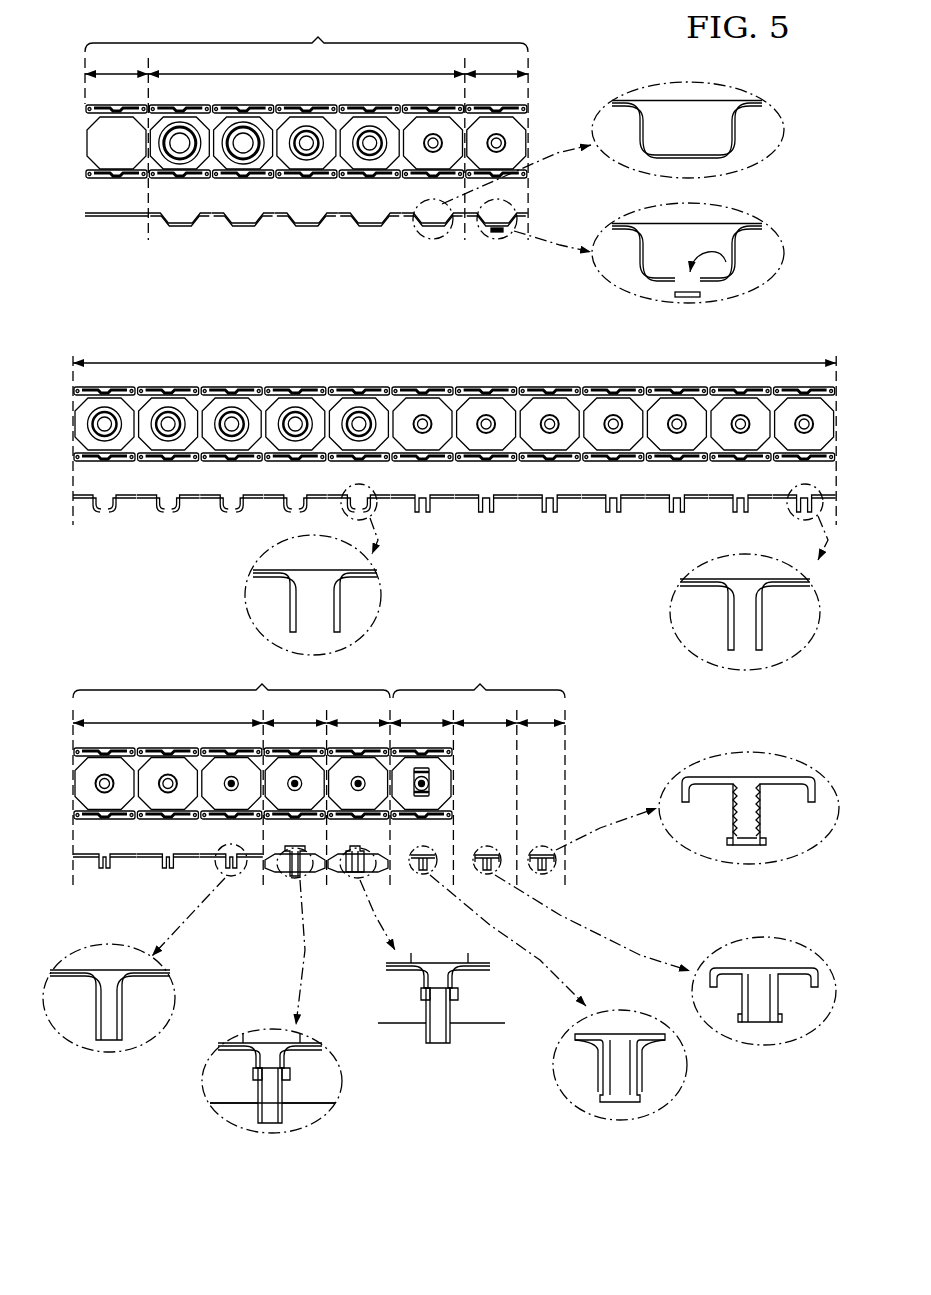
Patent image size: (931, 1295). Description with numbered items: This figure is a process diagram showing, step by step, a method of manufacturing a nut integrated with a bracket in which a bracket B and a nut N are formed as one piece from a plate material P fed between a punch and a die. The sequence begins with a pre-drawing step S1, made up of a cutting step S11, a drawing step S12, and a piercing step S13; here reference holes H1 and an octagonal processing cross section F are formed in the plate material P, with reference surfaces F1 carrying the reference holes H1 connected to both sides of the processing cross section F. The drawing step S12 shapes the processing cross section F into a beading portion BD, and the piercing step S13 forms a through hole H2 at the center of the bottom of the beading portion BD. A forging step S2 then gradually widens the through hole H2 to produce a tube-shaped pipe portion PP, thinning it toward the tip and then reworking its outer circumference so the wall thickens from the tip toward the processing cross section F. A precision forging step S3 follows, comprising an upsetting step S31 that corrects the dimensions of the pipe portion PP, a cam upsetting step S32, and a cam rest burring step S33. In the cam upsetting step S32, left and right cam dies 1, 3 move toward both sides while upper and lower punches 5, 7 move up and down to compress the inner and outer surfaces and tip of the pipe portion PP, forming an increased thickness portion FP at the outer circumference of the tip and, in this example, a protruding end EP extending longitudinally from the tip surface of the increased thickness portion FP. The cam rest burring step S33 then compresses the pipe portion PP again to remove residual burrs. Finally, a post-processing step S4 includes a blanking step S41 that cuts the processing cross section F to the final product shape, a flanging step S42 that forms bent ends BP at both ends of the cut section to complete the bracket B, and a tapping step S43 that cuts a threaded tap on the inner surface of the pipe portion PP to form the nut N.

The plate material P is at (84, 128).
The processing cross section F is at (100, 150).
The reference surface F1 is at (98, 105).
The reference hole H1 is at (88, 108).
The through hole H2 is at (718, 270).
The beading portion BD is at (742, 133).
The pipe portion PP is at (352, 601).
The bracket B is at (782, 780).
The bent end BP is at (810, 802).
The nut N is at (735, 812).
The increased thickness portion FP is at (284, 1080).
The protruding end EP is at (286, 1096).
The left cam die 1 is at (210, 1092).
The right cam die 3 is at (306, 1088).
The upper punch 5 is at (268, 1035).
The lower punch 7 is at (272, 1105).
The pre-drawing step S1 is at (306, 32).
The cutting step S11 is at (116, 60).
The drawing step S12 is at (306, 60).
The piercing step S13 is at (496, 60).
The forging step S2 is at (454, 349).
The precision forging step S3 is at (231, 679).
The upsetting step S31 is at (168, 709).
The cam upsetting step S32 is at (294, 709).
The cam rest burring step S33 is at (358, 709).
The post-processing step S4 is at (479, 679).
The blanking step S41 is at (421, 709).
The flanging step S42 is at (484, 709).
The tapping step S43 is at (541, 709).